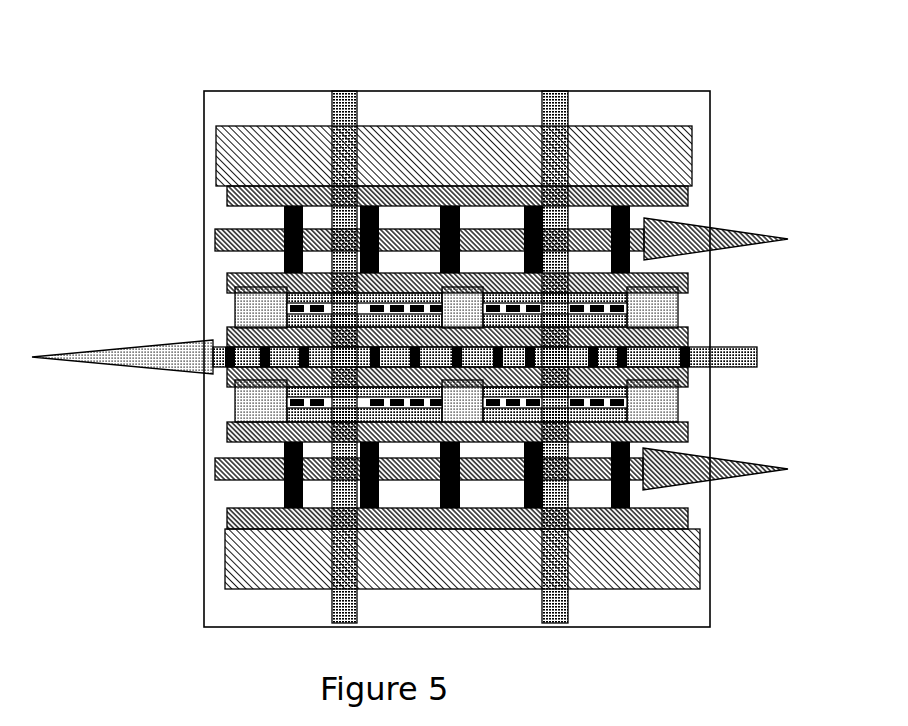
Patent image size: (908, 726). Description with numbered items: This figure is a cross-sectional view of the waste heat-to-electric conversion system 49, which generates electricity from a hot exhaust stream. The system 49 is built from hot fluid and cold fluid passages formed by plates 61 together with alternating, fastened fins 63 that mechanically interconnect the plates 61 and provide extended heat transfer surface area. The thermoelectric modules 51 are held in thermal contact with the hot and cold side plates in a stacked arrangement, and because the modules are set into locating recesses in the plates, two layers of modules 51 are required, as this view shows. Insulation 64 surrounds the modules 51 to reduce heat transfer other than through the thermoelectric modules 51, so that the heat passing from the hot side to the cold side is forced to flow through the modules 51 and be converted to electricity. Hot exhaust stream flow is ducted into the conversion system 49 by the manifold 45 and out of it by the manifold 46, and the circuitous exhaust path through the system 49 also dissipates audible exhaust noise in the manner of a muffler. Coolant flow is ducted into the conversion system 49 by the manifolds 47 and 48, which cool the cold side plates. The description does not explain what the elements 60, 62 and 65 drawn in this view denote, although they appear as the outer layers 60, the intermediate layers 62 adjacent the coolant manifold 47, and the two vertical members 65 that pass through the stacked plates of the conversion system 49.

The manifold 45 is at (215, 243).
The manifold 46 is at (770, 230).
The manifold 47 is at (757, 357).
The manifold 48 is at (105, 370).
The waste heat-to-electric conversion system 49 is at (606, 91).
The thermoelectric module 51 is at (612, 315).
The substrate 60 is at (692, 160).
The plate 61 is at (688, 193).
The insulating layer 62 is at (688, 337).
The fin 63 is at (284, 216).
The insulation 64 is at (235, 318).
The vertical conductive via 65 is at (346, 91).